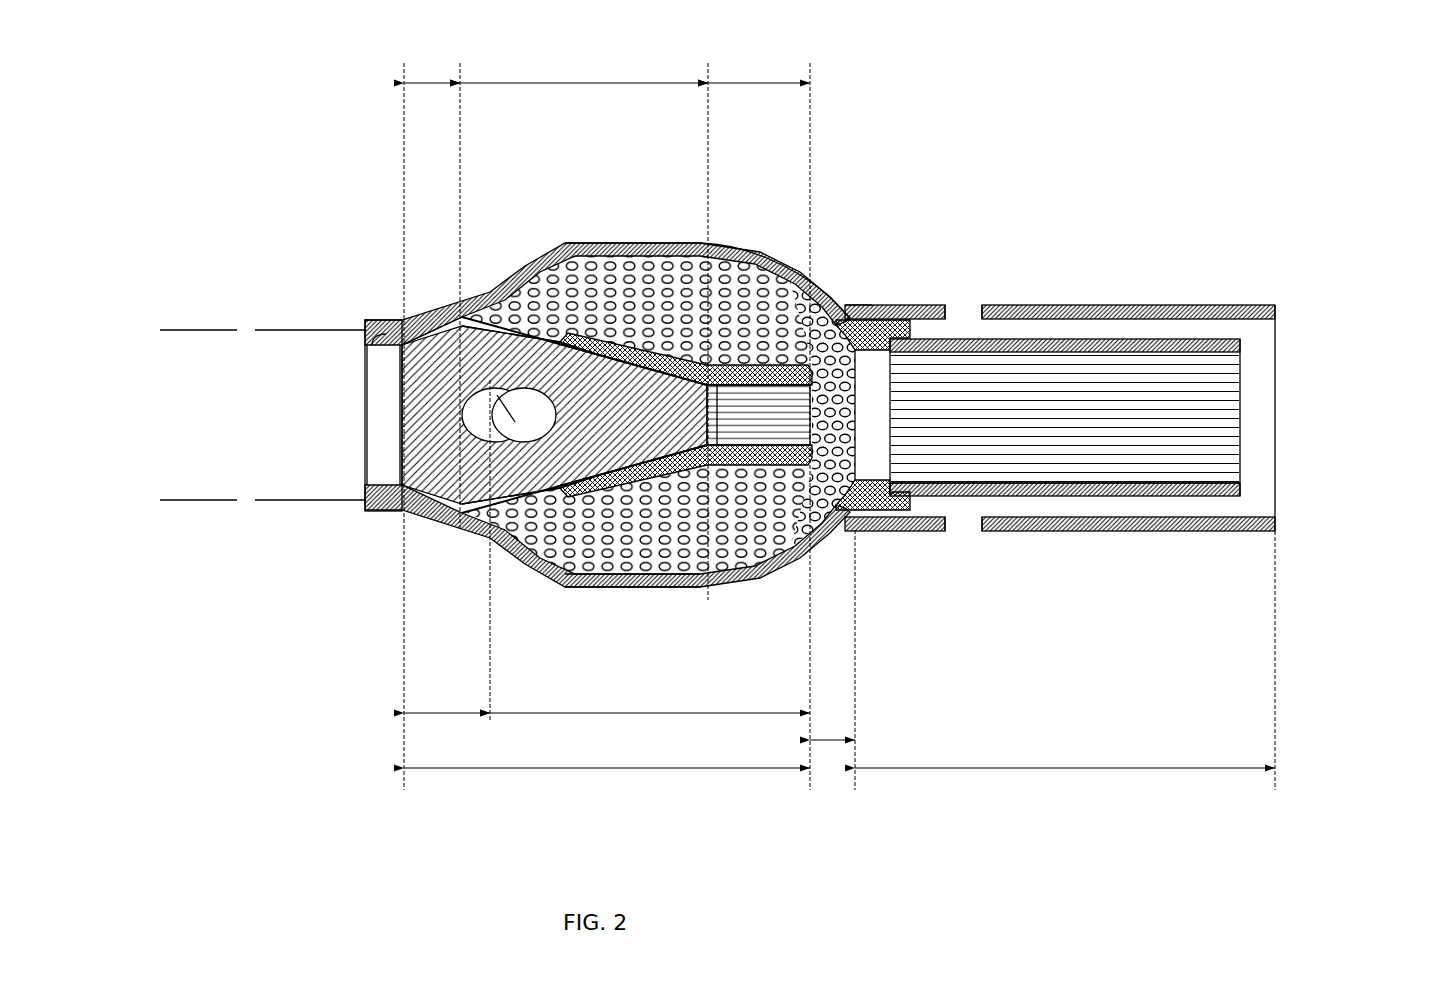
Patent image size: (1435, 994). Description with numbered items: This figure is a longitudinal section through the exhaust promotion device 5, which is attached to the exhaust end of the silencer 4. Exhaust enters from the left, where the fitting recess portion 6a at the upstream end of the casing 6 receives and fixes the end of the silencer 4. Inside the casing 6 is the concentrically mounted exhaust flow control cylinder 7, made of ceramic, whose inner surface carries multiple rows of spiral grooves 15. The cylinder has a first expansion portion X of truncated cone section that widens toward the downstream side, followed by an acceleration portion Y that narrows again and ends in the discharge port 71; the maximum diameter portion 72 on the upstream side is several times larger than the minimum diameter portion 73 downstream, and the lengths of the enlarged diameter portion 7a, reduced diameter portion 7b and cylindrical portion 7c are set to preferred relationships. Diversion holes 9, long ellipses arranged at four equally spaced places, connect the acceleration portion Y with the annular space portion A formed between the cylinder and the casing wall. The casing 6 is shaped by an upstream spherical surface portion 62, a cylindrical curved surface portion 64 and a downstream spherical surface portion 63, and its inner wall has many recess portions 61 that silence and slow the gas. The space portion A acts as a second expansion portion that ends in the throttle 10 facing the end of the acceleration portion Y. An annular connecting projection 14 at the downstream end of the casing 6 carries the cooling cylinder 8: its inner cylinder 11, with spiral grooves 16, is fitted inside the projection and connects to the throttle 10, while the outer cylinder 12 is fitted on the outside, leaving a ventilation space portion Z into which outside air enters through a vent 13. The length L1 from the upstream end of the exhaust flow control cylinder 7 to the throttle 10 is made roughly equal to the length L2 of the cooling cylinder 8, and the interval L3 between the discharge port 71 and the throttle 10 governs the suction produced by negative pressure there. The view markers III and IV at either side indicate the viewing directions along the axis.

The silencer 4 is at (304, 328).
The exhaust promotion device 5 is at (844, 262).
The casing 6 is at (648, 400).
The fitting recess portion 6a is at (386, 336).
The exhaust flow control cylinder 7 is at (660, 290).
The enlarged diameter portion 7a is at (432, 82).
The reduced diameter portion 7b is at (588, 82).
The cylindrical portion 7c is at (756, 82).
The cooling cylinder 8 is at (1185, 300).
The diversion holes 9 is at (460, 316).
The throttle 10 is at (868, 362).
The inner cylinder 11 is at (1120, 338).
The outer cylinder 12 is at (1250, 533).
The vent 13 is at (963, 305).
The annular connecting projection 14 is at (877, 532).
The spiral grooves 15 is at (448, 450).
The spiral grooves 16 is at (1025, 457).
The recess portions 61 is at (602, 247).
The upstream spherical surface portion 62 is at (540, 250).
The downstream spherical surface portion 63 is at (812, 300).
The cylindrical curved surface portion 64 is at (648, 256).
The discharge port 71 is at (892, 418).
The maximum diameter portion 72 is at (418, 340).
The minimum diameter portion 73 is at (868, 302).
The space portion A is at (664, 586).
The first expansion portion X is at (447, 698).
The acceleration portion Y is at (650, 702).
The ventilation space portion Z is at (1115, 497).
The length from upstream end of exhaust flow control cylinder to throttle L1 is at (607, 787).
The length of cooling cylinder L2 is at (1065, 787).
The interval between discharge port and throttle L3 is at (836, 745).
The section III direction III is at (200, 412).
The section IV direction IV is at (1300, 422).